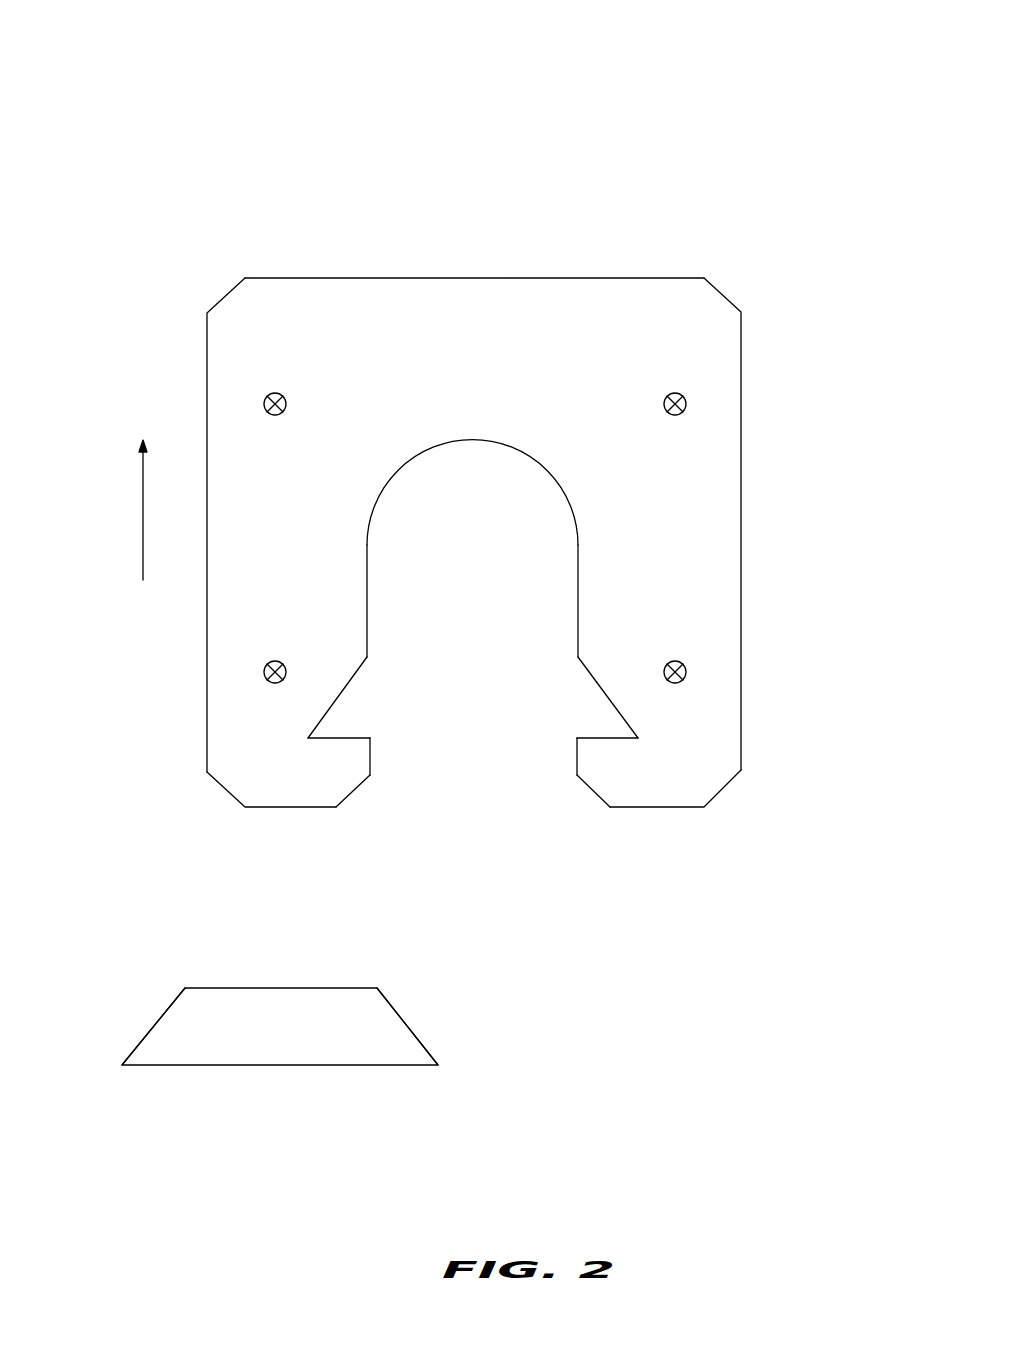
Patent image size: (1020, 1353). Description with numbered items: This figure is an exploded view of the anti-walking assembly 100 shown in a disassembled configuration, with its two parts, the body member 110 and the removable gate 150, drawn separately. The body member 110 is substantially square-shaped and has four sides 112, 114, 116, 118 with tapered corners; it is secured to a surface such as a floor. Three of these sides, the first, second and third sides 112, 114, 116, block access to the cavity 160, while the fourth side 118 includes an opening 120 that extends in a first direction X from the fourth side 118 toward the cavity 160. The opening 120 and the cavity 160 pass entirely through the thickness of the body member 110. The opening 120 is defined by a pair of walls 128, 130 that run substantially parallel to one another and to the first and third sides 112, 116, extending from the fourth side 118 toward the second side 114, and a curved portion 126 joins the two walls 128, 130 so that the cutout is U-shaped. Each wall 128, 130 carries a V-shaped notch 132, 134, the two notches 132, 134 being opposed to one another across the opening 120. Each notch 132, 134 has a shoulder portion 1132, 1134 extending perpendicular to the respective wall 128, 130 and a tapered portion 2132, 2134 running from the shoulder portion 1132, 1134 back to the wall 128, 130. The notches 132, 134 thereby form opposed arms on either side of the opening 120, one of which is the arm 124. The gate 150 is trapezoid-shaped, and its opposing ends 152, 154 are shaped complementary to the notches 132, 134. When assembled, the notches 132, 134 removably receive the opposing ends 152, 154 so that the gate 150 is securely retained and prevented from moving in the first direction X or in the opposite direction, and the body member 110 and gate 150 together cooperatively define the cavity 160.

The anti-walking assembly 100 is at (463, 590).
The body member 110 is at (463, 530).
The first side 112 is at (741, 417).
The second side 114 is at (565, 278).
The third side 116 is at (208, 633).
The fourth side 118 is at (275, 807).
The opening 120 is at (456, 618).
The arm 124 is at (703, 718).
The curved portion 126 is at (467, 440).
The wall 128 is at (367, 568).
The wall 130 is at (578, 557).
The notch 132 is at (329, 710).
The notch 134 is at (622, 718).
The cavity 160 is at (490, 560).
The shoulder portion 1132 is at (313, 740).
The shoulder portion 1134 is at (603, 742).
The tapered portion 2132 is at (337, 697).
The tapered portion 2134 is at (590, 670).
The removable gate 150 is at (426, 1029).
The opposing end 152 is at (142, 1065).
The opposing end 154 is at (440, 1065).